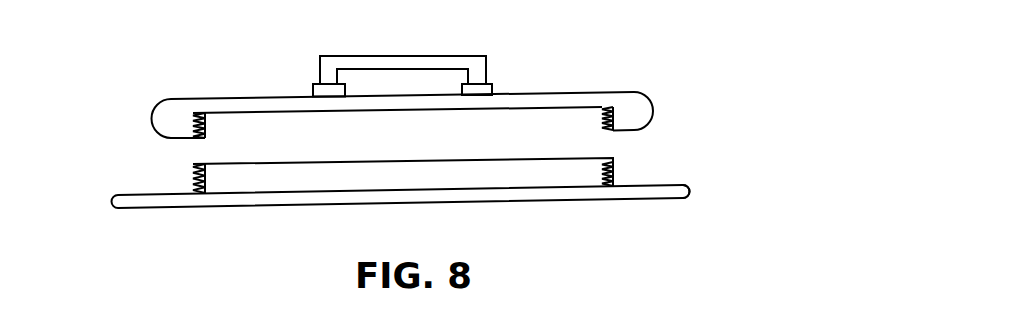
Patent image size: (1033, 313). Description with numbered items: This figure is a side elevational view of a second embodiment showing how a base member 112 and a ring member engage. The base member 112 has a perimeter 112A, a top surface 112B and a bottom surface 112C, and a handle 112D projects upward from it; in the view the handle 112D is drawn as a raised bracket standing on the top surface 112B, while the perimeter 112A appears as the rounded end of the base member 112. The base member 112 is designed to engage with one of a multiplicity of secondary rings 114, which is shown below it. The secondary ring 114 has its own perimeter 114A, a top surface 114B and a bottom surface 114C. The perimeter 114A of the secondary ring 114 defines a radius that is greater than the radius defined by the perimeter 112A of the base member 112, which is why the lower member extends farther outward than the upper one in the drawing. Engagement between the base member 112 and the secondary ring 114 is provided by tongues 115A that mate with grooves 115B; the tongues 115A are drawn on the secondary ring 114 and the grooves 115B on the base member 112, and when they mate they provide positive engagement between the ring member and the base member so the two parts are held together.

The base member 112 is at (143, 97).
The perimeter 112A is at (655, 112).
The top surface 112B is at (523, 92).
The bottom surface 112C is at (462, 108).
The handle 112D is at (415, 55).
The secondary ring 114 is at (143, 172).
The perimeter 114A is at (693, 190).
The top surface 114B is at (322, 163).
The bottom surface 114C is at (298, 205).
The tongues 115A is at (615, 170).
The grooves 115B is at (602, 125).